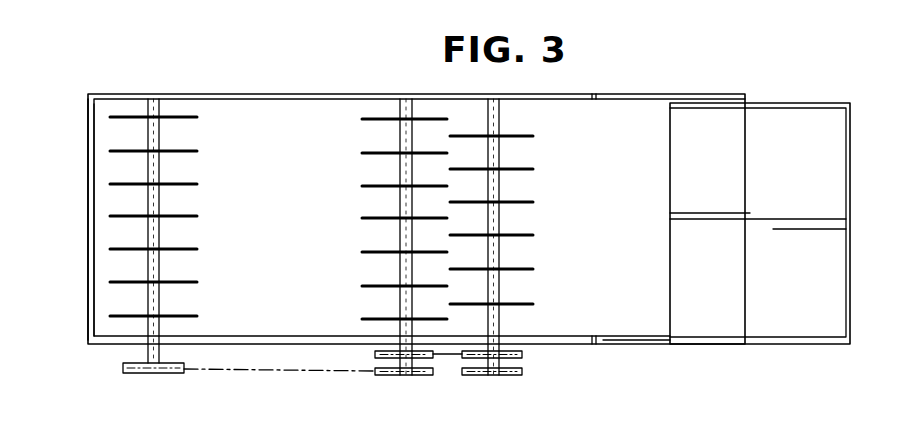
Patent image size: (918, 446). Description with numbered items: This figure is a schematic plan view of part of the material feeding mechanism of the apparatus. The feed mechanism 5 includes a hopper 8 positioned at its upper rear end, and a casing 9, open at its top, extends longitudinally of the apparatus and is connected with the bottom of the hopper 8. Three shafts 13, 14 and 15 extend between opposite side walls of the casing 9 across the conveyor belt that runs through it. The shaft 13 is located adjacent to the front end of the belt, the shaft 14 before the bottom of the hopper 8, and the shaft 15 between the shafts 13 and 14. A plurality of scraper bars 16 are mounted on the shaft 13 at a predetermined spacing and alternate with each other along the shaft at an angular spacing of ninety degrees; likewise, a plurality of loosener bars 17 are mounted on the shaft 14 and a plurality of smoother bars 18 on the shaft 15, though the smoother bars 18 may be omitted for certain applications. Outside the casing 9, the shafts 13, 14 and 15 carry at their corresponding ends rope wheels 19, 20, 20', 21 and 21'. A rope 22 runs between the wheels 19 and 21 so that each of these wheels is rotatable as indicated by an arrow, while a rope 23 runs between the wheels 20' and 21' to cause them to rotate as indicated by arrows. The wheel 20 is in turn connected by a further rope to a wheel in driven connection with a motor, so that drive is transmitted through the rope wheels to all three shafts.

The feed mechanism 5 is at (328, 90).
The hopper 8 is at (791, 112).
The casing 9 is at (92, 215).
The shaft 13 is at (160, 140).
The shaft 14 is at (500, 154).
The shaft 15 is at (400, 141).
The scraper bars 16 is at (191, 248).
The loosener bars 17 is at (531, 268).
The smoother bars 18 is at (372, 253).
The rope wheel 19 is at (149, 375).
The rope wheel 20 is at (492, 391).
The rope wheel 20' is at (517, 360).
The rope wheel 21 is at (404, 391).
The rope wheel 21' is at (381, 354).
The rope 22 is at (296, 374).
The rope 23 is at (447, 358).